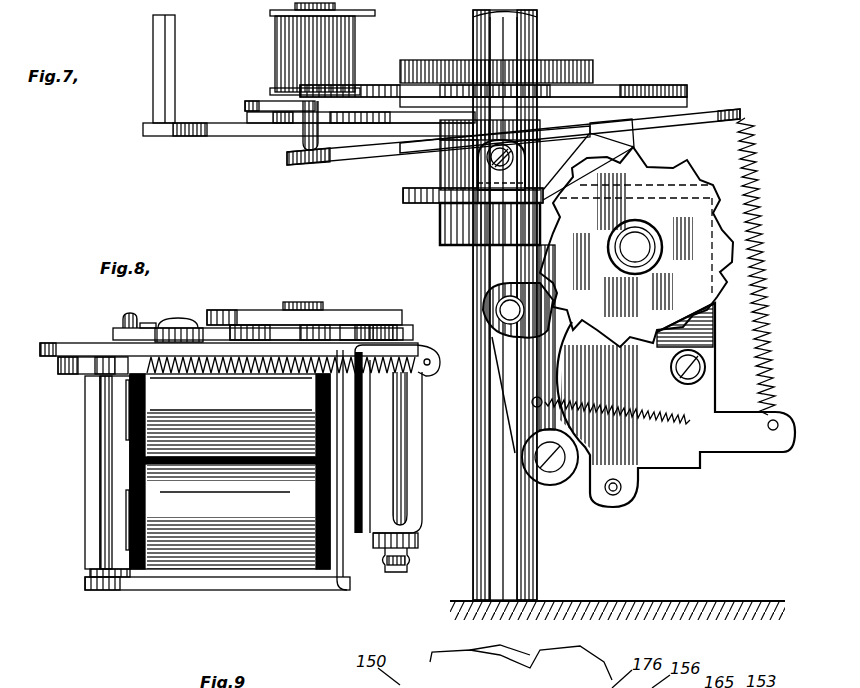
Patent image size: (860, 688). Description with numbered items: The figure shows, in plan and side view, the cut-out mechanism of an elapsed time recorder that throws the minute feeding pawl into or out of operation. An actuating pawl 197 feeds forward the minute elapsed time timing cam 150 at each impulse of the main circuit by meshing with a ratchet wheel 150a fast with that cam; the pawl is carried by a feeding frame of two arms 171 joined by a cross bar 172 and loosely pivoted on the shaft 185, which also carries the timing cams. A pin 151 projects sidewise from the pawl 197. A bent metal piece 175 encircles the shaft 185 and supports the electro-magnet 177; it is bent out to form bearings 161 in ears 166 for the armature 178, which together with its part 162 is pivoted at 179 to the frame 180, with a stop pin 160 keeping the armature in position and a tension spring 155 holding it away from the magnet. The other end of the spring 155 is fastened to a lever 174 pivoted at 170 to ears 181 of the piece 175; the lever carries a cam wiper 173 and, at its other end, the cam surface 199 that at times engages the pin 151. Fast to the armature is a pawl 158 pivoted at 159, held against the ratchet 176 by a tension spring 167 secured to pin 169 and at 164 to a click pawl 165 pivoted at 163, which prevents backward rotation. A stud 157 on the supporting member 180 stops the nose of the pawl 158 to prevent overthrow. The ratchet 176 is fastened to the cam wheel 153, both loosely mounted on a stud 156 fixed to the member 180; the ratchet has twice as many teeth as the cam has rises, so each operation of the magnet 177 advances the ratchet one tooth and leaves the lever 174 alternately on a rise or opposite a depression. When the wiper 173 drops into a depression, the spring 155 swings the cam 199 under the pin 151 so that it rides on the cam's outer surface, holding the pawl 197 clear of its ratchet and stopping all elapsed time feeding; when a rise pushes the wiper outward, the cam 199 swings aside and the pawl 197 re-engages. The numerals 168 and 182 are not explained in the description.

In FIG. 7, the minute elapsed time timing cam 150 is at (505, 80).
In FIG. 7, the ratchet wheel 150a is at (647, 100).
In FIG. 7, the pin 151 is at (313, 133).
In FIG. 7, the cam wheel 153 is at (647, 168).
In FIG. 8, the cam wheel 153 is at (243, 315).
In FIG. 7, the tension spring 155 is at (752, 206).
In FIG. 8, the tension spring 155 is at (380, 375).
In FIG. 7, the stud 156 is at (637, 245).
In FIG. 8, the stud 156 is at (300, 310).
In FIG. 7, the stud 157 is at (510, 310).
In FIG. 7, the pawl 158 is at (507, 380).
In FIG. 7, the pivot 159 is at (543, 485).
In FIG. 7, the stop pin 160 is at (613, 496).
In FIG. 8, the stop pin 160 is at (62, 366).
In FIG. 7, the bearings 161 is at (683, 467).
In FIG. 8, the bearings 161 is at (113, 350).
In FIG. 7, the armature 162 is at (750, 443).
In FIG. 7, the pivot 163 is at (700, 370).
In FIG. 8, the pivot 163 is at (175, 323).
In FIG. 7, the spring attachment point 164 is at (693, 417).
In FIG. 8, the spring attachment point 164 is at (148, 315).
In FIG. 7, the click pawl 165 is at (663, 347).
In FIG. 7, the ears 166 is at (647, 467).
In FIG. 8, the ears 166 is at (75, 348).
In FIG. 7, the tension spring 167 is at (603, 495).
In FIG. 8, the tension spring 167 is at (125, 318).
In FIG. 7, the base 168 is at (630, 603).
In FIG. 7, the pin 169 is at (522, 396).
In FIG. 7, the pivot 170 is at (488, 156).
In FIG. 7, the arms 171 is at (213, 130).
In FIG. 7, the cross bar 172 is at (172, 101).
In FIG. 7, the cam wiper 173 is at (612, 130).
In FIG. 7, the lever 174 is at (697, 118).
In FIG. 8, the lever 174 is at (410, 465).
In FIG. 7, the bent metal piece 175 is at (430, 203).
In FIG. 7, the ratchet 176 is at (763, 276).
In FIG. 8, the ratchet 176 is at (345, 325).
In FIG. 8, the electro-magnet 177 is at (230, 471).
In FIG. 8, the armature 178 is at (92, 485).
In FIG. 8, the pivot 179 is at (110, 585).
In FIG. 8, the frame 180 is at (297, 585).
In FIG. 8, the ears 181 is at (432, 349).
In FIG. 8, the bracket 182 is at (345, 460).
In FIG. 7, the shaft 185 is at (497, 557).
In FIG. 7, the actuating pawl 197 is at (258, 112).
In FIG. 7, the cam surface 199 is at (300, 165).